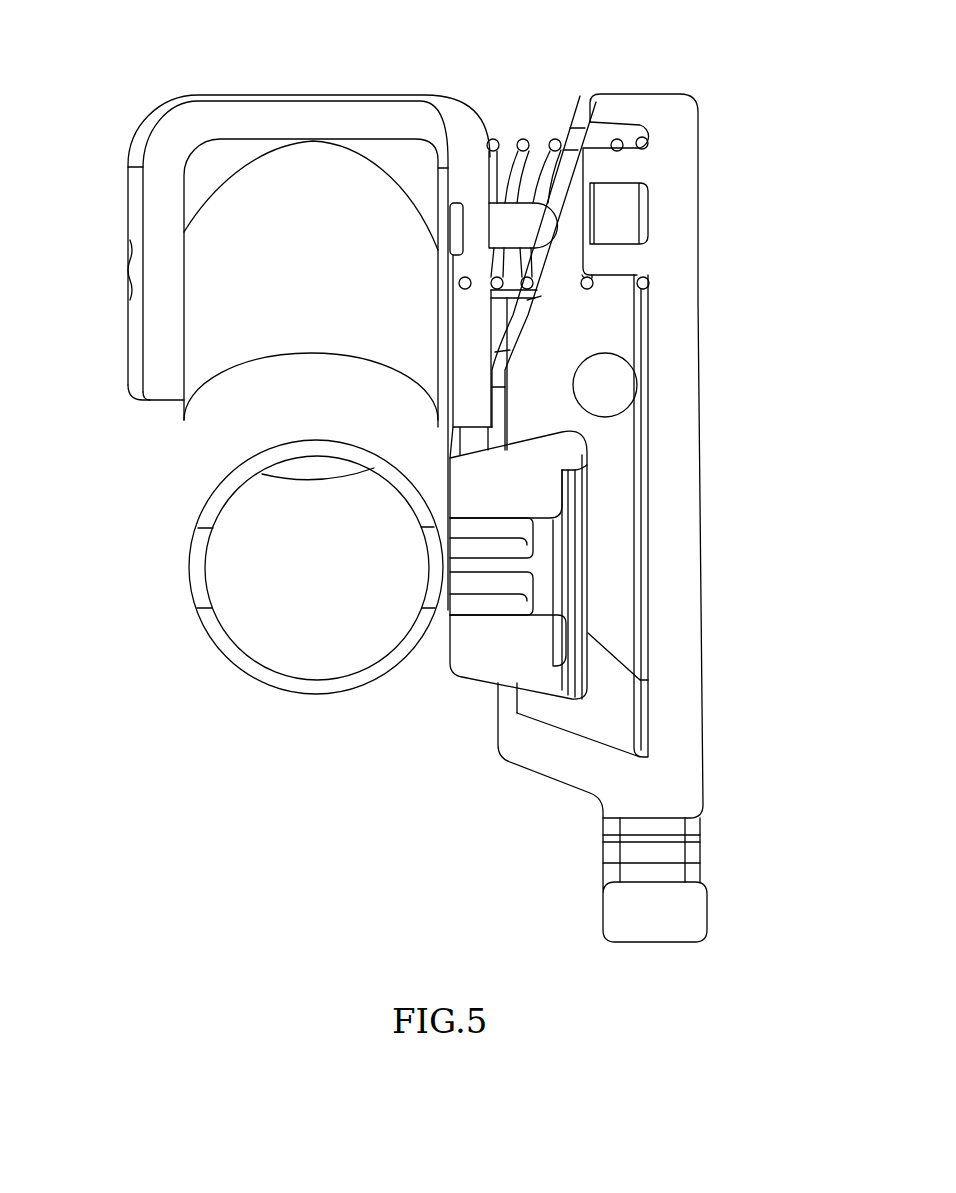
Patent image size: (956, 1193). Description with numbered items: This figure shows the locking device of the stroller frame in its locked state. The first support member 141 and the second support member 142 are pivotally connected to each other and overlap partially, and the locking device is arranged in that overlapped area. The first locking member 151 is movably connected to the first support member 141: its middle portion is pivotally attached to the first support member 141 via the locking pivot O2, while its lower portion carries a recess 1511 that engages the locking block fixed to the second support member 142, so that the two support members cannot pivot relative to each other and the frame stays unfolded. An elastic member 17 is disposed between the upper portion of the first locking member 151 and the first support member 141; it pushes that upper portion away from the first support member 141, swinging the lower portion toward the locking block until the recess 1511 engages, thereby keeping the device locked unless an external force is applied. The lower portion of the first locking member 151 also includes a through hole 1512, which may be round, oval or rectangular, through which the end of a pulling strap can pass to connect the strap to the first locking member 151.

The first support member 141 is at (183, 130).
The second support member 142 is at (265, 637).
The elastic member 17 is at (547, 160).
The first locking member 151 is at (673, 305).
The locking pivot O2 is at (607, 385).
The recess 1511 is at (603, 712).
The through hole 1512 is at (665, 848).